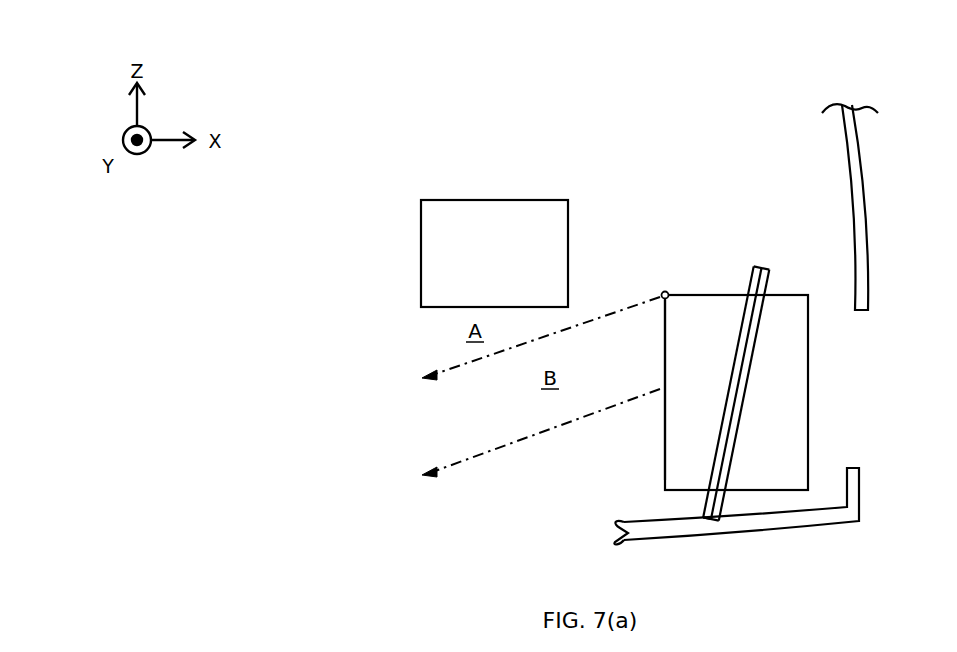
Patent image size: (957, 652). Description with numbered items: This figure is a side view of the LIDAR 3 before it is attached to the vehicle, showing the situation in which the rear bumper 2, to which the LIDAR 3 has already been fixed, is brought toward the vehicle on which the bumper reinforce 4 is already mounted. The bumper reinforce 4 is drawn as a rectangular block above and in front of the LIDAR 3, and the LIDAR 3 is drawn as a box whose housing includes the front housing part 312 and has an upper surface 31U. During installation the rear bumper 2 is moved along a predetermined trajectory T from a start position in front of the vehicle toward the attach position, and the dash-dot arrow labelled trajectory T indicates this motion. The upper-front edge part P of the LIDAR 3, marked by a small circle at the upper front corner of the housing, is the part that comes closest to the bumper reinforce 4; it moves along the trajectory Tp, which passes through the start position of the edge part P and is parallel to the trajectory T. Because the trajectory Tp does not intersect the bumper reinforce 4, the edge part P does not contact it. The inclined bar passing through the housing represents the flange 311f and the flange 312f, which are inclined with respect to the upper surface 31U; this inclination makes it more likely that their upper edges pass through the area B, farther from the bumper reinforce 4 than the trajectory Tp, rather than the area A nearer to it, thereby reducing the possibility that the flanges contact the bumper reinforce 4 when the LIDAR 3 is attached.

The rear bumper 2 is at (862, 150).
The LIDAR 3 is at (665, 424).
The bumper reinforce 4 is at (421, 265).
The front housing part 312 is at (665, 378).
The upper surface of the housing 31U is at (707, 297).
The flange of the rear housing part 311f is at (716, 523).
The flange of the front housing part 312f is at (705, 523).
The upper-front edge part P is at (667, 291).
The trajectory T is at (476, 453).
The trajectory of the upper-front edge part Tp is at (476, 359).